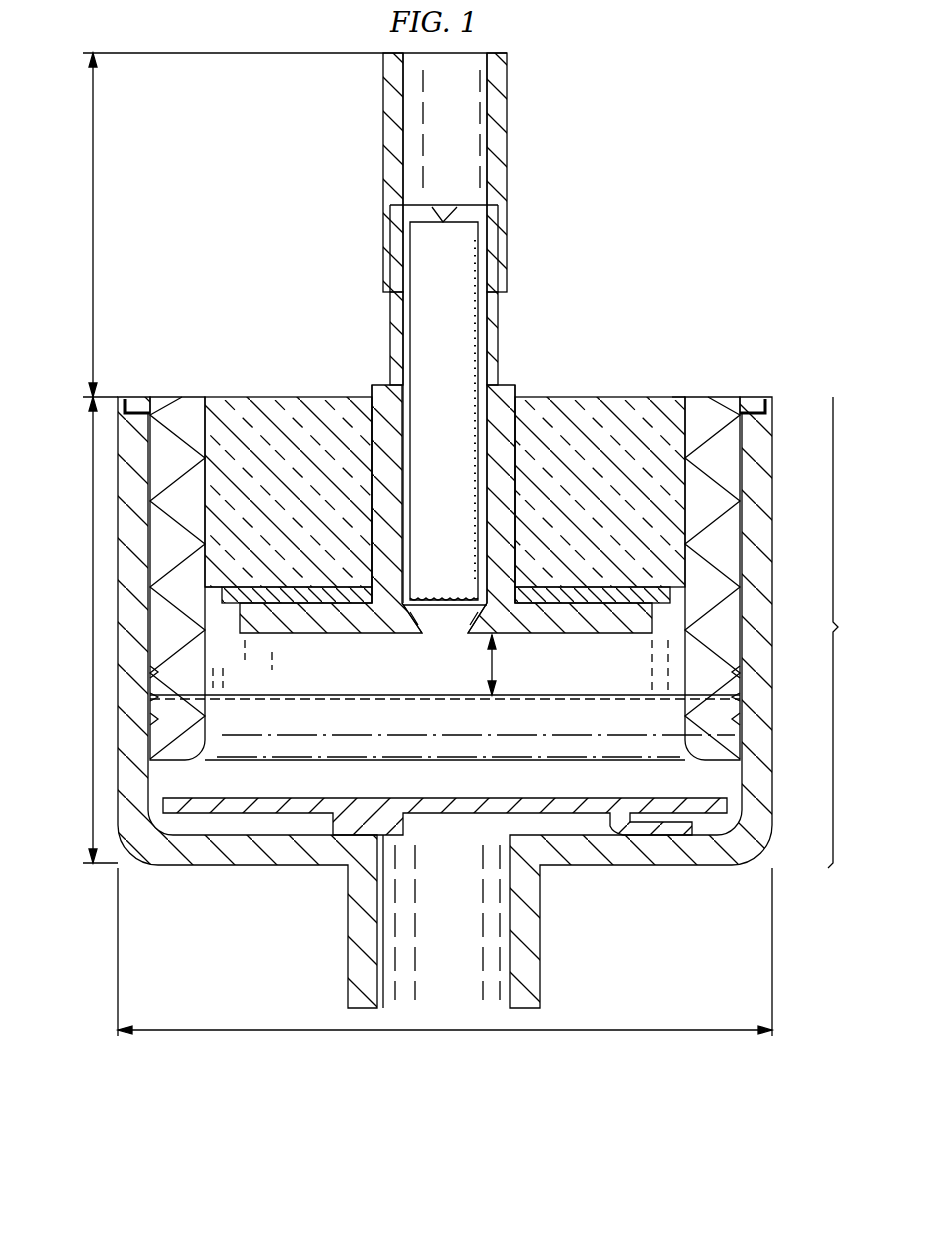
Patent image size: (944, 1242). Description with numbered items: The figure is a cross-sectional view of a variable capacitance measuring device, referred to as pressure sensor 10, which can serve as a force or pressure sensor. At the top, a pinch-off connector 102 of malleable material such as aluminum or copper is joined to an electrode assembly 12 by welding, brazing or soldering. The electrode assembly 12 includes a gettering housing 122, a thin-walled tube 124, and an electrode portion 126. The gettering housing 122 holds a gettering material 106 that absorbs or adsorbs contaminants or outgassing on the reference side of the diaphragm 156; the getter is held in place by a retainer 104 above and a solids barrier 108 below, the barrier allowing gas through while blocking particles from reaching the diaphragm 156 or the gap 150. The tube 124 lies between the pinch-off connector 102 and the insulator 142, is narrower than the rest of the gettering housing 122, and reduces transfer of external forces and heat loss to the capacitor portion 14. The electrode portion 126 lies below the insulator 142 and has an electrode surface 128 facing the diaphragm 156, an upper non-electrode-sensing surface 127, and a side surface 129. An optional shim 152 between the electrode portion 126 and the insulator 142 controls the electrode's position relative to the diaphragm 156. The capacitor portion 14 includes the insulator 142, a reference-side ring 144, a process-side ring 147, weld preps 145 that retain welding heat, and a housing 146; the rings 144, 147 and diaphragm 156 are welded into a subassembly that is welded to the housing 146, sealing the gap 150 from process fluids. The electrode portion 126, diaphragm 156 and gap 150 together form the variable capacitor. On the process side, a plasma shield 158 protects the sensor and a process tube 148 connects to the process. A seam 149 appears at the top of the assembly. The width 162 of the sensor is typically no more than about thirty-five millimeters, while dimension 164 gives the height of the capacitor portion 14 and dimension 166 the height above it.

The pressure sensor 10 is at (658, 160).
The electrode assembly 12 is at (540, 355).
The capacitor portion 14 is at (849, 632).
The pinch-off connector 102 is at (498, 89).
The retainer 104 is at (458, 211).
The gettering material 106 is at (427, 267).
The solids barrier 108 is at (440, 634).
The gettering housing 122 is at (522, 471).
The tube 124 is at (504, 321).
The electrode portion 126 is at (340, 634).
The non-electrode-sensing surface 127 is at (598, 590).
The electrode surface 128 is at (605, 634).
The side surface 129 is at (660, 634).
The insulator 142 is at (265, 397).
The reference-side ring 144 is at (182, 397).
The weld preps 145 is at (745, 673).
The housing 146 is at (127, 497).
The process-side ring 147 is at (190, 718).
The process tube 148 is at (372, 522).
The seam 149 is at (683, 397).
The gap 150 is at (496, 662).
The shim 152 is at (240, 633).
The diaphragm 156 is at (570, 700).
The plasma shield 158 is at (665, 834).
The width 162 is at (445, 1034).
The height of the capacitor portion 164 is at (93, 632).
The dimension 166 is at (93, 256).